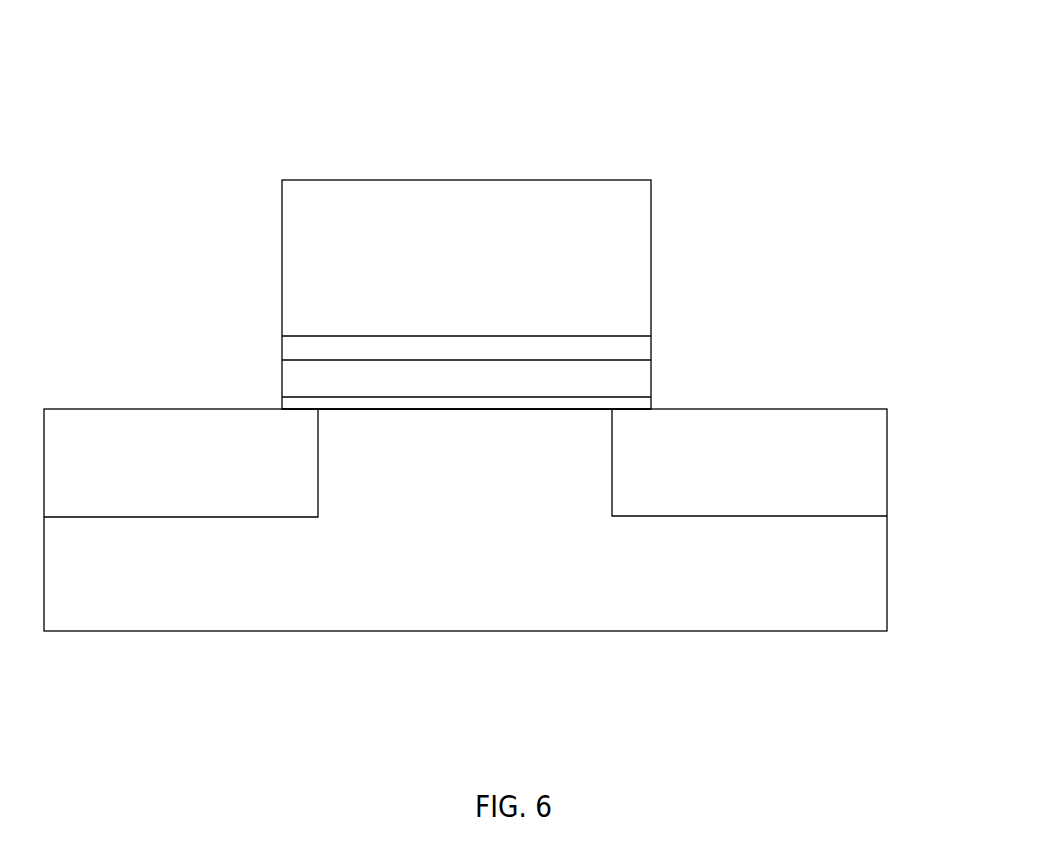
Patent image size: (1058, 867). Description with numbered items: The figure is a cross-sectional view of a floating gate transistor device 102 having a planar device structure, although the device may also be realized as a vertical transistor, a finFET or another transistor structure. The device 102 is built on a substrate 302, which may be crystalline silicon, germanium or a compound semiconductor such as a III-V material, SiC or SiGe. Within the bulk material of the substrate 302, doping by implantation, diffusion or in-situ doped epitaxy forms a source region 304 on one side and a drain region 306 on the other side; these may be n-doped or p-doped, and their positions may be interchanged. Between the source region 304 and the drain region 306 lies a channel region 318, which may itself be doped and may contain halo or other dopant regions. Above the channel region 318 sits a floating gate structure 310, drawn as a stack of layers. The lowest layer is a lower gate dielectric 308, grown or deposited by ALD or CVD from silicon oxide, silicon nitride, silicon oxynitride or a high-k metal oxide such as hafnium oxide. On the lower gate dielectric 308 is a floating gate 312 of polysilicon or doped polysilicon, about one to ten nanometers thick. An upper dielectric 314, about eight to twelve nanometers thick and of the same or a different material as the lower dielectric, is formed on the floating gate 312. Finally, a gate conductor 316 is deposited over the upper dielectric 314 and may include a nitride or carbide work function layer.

The floating gate transistor device 102 is at (486, 29).
The substrate 302 is at (857, 580).
The source region 304 is at (113, 447).
The drain region 306 is at (836, 427).
The lower gate dielectric 308 is at (282, 407).
The floating gate structure 310 is at (441, 180).
The floating gate 312 is at (652, 381).
The upper dielectric 314 is at (652, 347).
The gate conductor 316 is at (605, 257).
The channel region 318 is at (491, 410).